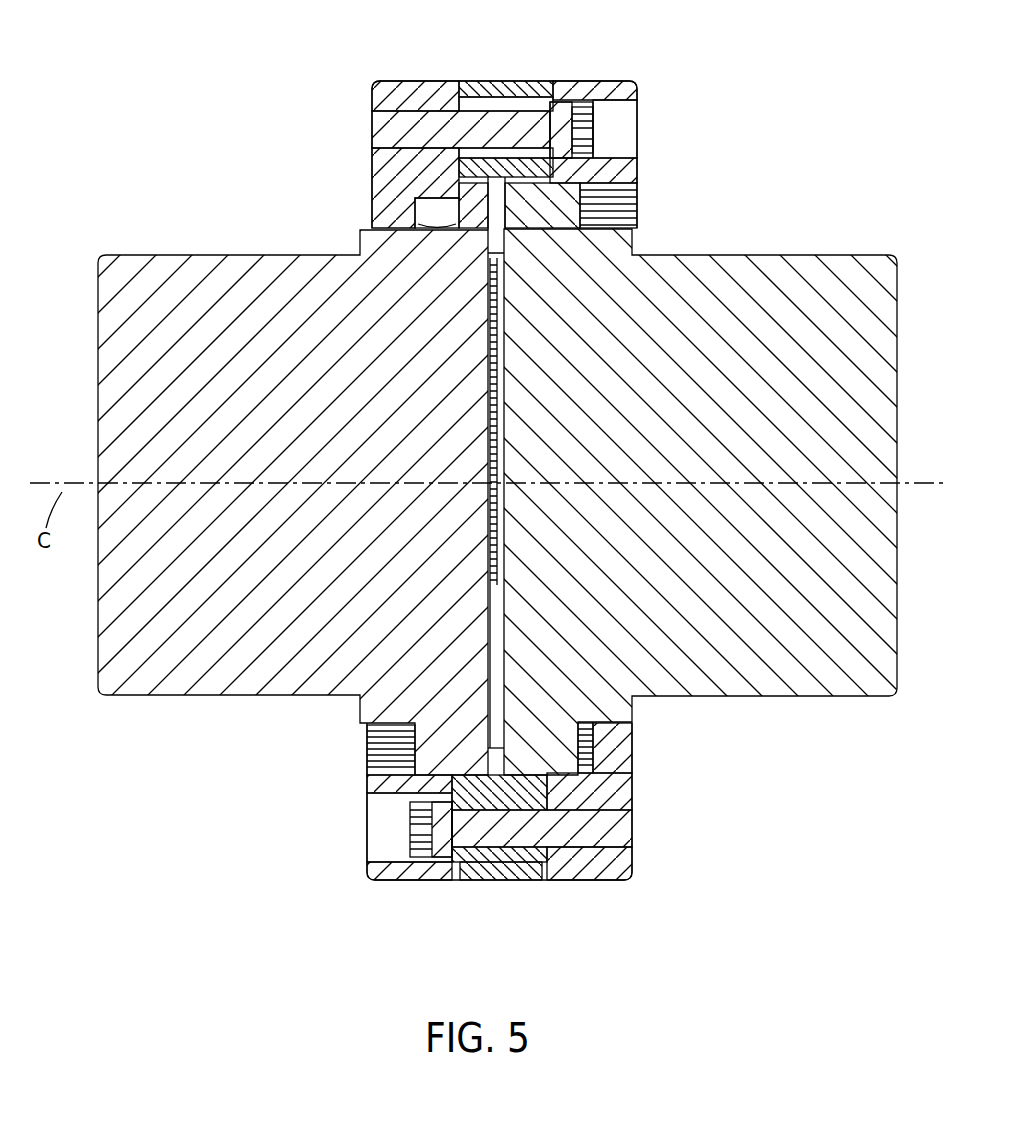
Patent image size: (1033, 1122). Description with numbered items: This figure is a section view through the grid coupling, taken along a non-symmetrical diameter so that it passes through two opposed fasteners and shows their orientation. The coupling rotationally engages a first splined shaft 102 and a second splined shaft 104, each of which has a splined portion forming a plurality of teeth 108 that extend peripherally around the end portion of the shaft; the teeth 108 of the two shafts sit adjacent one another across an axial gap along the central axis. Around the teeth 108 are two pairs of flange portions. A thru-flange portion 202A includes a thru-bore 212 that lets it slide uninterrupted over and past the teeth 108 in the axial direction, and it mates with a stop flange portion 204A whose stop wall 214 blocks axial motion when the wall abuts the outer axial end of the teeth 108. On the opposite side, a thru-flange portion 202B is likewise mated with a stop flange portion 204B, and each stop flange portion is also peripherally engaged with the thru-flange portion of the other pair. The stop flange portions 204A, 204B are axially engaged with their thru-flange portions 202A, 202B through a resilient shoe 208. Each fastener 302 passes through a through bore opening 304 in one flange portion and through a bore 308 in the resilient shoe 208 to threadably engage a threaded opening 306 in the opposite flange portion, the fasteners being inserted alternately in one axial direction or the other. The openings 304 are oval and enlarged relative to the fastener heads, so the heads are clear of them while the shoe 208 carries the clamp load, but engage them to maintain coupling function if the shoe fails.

The first splined shaft 102 is at (102, 354).
The second splined shaft 104 is at (880, 360).
The teeth 108 is at (545, 203).
The thru-flange portion 202A is at (605, 95).
The thru-flange portion 202B is at (400, 870).
The stop flange portion 204A is at (402, 95).
The stop flange portion 204B is at (605, 870).
The resilient shoe 208 is at (512, 120).
The thru-bore 212 is at (642, 213).
The stop wall 214 is at (380, 208).
The fastener 302 is at (515, 128).
The through bore opening 304 is at (630, 120).
The threaded opening 306 is at (397, 158).
The bore 308 is at (452, 118).